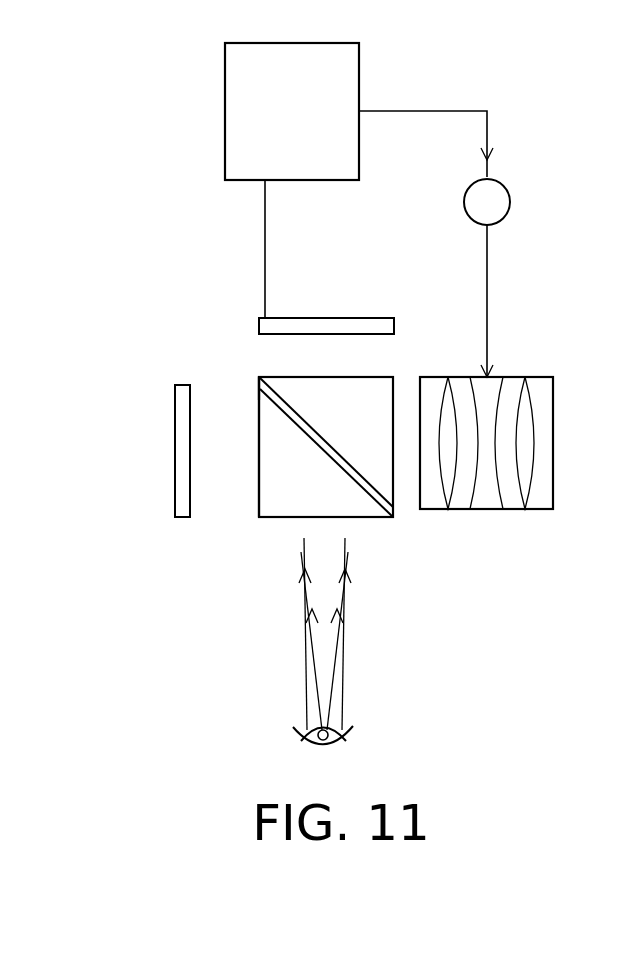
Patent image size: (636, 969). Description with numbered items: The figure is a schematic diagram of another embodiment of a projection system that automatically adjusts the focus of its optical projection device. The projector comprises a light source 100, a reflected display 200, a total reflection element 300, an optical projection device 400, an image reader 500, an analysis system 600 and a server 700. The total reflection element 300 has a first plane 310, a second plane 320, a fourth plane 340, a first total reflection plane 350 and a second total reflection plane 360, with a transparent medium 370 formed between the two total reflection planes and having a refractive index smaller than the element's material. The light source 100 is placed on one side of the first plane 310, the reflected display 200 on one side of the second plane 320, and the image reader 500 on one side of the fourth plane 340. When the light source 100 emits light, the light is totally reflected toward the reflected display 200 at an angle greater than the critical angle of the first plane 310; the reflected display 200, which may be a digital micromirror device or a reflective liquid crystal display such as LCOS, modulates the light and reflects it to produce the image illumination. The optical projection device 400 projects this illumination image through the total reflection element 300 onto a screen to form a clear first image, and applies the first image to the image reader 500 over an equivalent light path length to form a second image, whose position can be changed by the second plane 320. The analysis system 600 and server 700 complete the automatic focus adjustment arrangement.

The light source 100 is at (355, 735).
The reflected display 200 is at (175, 450).
The total reflection element 300 is at (333, 466).
The first plane 310 is at (268, 518).
The second plane 320 is at (258, 495).
The fourth plane 340 is at (376, 377).
The first total reflection plane 350 is at (330, 458).
The second total reflection plane 360 is at (328, 452).
The transparent medium 370 is at (259, 380).
The optical projection device 400 is at (520, 509).
The image reader 500 is at (327, 318).
The analysis system 600 is at (225, 112).
The server 700 is at (510, 203).